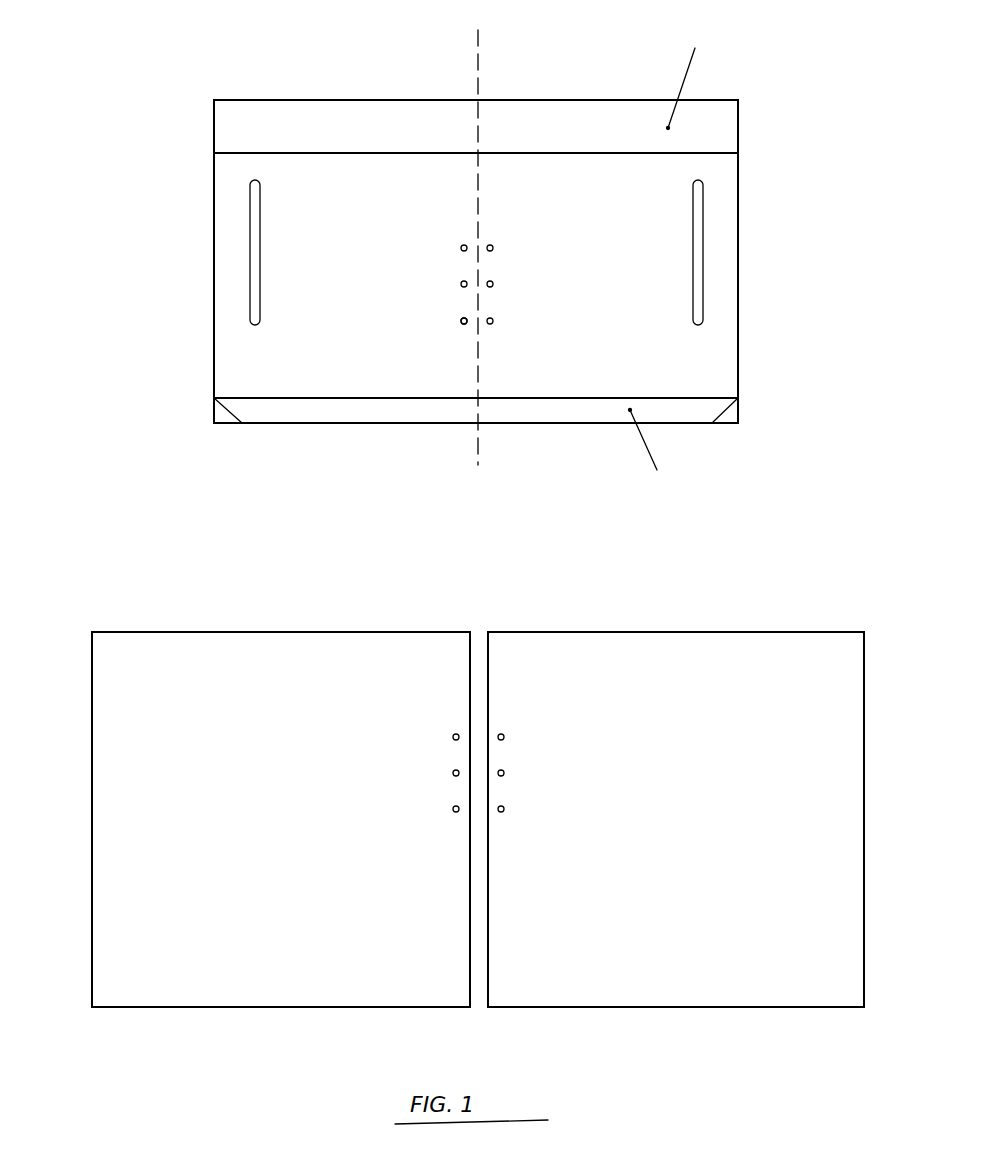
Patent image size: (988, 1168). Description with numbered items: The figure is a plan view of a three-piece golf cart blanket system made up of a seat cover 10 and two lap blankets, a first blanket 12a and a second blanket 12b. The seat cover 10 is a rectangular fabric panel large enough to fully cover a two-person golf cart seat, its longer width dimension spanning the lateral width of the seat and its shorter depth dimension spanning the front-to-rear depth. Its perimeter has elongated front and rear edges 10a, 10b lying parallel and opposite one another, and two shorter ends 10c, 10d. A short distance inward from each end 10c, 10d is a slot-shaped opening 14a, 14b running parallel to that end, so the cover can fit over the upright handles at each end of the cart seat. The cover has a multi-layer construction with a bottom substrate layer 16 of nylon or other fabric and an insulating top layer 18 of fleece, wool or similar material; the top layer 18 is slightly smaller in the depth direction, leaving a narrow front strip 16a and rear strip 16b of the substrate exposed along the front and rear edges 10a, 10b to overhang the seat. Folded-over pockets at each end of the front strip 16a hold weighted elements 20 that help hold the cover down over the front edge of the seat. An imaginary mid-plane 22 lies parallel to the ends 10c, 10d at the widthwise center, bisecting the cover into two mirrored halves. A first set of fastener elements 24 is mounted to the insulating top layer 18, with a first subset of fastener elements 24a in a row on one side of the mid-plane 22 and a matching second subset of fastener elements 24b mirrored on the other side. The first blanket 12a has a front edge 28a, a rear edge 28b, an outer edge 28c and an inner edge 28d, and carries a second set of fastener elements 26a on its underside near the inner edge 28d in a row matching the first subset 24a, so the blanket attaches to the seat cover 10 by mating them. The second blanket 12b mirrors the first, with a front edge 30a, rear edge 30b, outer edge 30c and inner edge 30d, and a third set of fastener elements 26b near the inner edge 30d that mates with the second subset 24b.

The seat cover 10 is at (735, 80).
The front edge 10a is at (430, 424).
The rear edge 10b is at (347, 100).
The end 10c is at (214, 294).
The end 10d is at (740, 290).
The first blanket 12a is at (297, 860).
The second blanket 12b is at (672, 857).
The slot-shaped opening 14a is at (253, 275).
The slot-shaped opening 14b is at (697, 275).
The bottom substrate layer 16 is at (338, 410).
The front strip 16a is at (540, 410).
The rear strip 16b is at (572, 105).
The insulating top layer 18 is at (370, 245).
The weighted elements 20 is at (224, 416).
The mid-plane 22 is at (483, 40).
The first set of fastener elements 24 is at (456, 323).
The first subset of fastener elements 24a is at (462, 318).
The second subset of fastener elements 24b is at (492, 318).
The second set of fastener elements 26a is at (454, 806).
The third set of fastener elements 26b is at (503, 806).
The front edge 28a is at (298, 1008).
The rear edge 28b is at (198, 632).
The outer edge 28c is at (92, 815).
The inner edge 28d is at (470, 660).
The front edge 30a is at (673, 1008).
The rear edge 30b is at (672, 632).
The outer edge 30c is at (868, 825).
The inner edge 30d is at (488, 985).